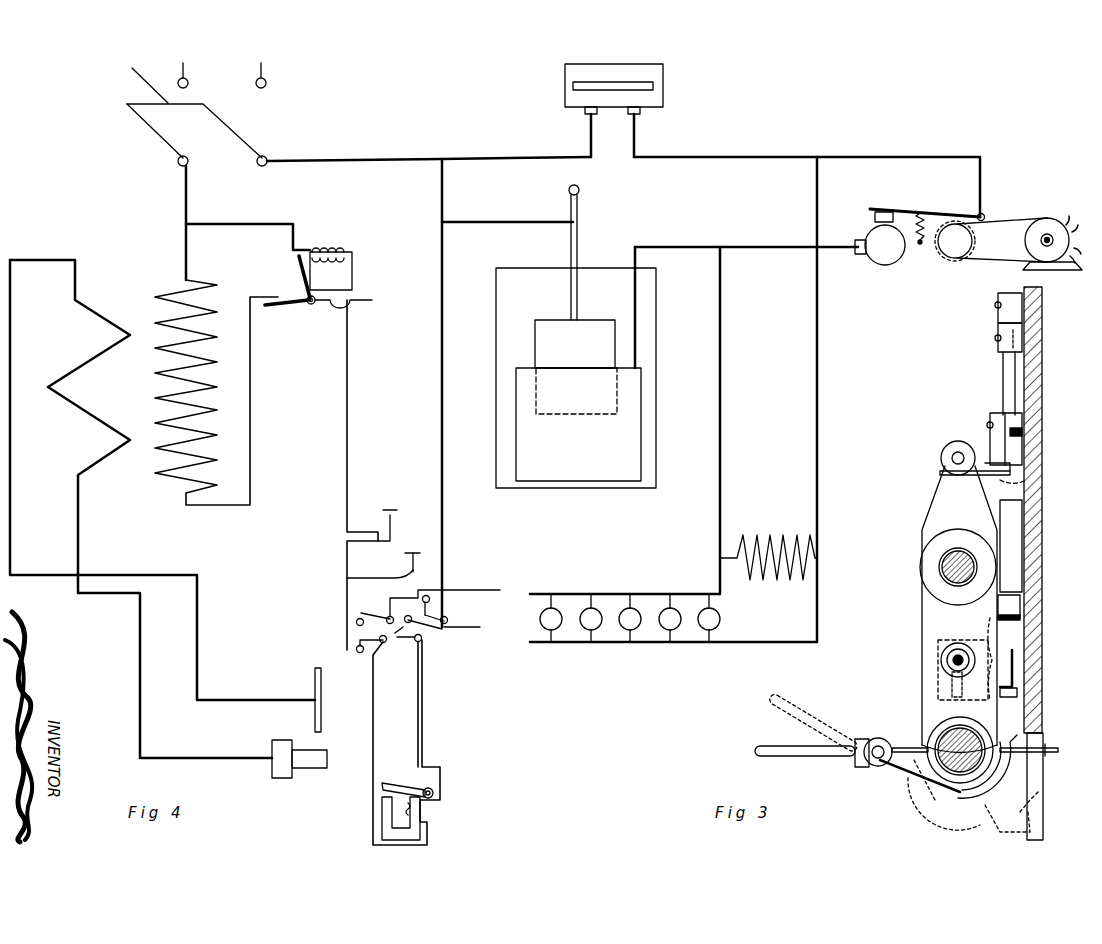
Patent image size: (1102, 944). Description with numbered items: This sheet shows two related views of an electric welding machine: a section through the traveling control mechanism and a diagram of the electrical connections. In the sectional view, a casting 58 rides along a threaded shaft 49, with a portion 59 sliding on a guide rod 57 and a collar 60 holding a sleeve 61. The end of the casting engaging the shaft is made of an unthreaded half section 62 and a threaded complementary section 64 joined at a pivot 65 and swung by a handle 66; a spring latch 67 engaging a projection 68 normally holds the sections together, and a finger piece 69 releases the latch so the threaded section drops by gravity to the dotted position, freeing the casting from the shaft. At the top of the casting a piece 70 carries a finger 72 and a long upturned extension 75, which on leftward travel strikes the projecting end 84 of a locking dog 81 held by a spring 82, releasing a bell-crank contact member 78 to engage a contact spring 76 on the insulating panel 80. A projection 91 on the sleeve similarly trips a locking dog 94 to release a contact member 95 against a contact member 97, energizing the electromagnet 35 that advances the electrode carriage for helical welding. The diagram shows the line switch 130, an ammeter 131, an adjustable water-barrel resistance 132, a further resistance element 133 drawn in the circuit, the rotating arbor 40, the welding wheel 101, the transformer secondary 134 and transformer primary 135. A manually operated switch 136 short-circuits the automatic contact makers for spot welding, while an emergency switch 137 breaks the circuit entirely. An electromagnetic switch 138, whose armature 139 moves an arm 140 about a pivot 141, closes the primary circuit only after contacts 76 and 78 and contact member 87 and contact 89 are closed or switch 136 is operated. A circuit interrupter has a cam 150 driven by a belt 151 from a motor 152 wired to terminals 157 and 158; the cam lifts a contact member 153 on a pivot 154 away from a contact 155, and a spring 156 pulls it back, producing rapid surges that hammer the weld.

In FIG. 4, the line switch 130 is at (240, 130).
In FIG. 4, the ammeter 131 is at (663, 97).
In FIG. 4, the adjustable water-barrel resistance 132 is at (629, 391).
In FIG. 4, the resistor 133 is at (770, 533).
In FIG. 4, the transformer secondary 134 is at (92, 412).
In FIG. 4, the transformer primary 135 is at (168, 378).
In FIG. 4, the manually operated switch 136 is at (413, 553).
In FIG. 4, the emergency switch 137 is at (384, 510).
In FIG. 4, the electromagnetic switch 138 is at (328, 252).
In FIG. 4, the armature 139 is at (300, 270).
In FIG. 4, the arm 140 is at (290, 306).
In FIG. 4, the pivot 141 is at (318, 305).
In FIG. 4, the cam 150 is at (962, 236).
In FIG. 4, the belt 151 is at (1012, 226).
In FIG. 4, the motor 152 is at (1059, 232).
In FIG. 4, the contact member 153 is at (900, 209).
In FIG. 4, the pivot 154 is at (984, 214).
In FIG. 4, the contact 155 is at (880, 230).
In FIG. 4, the spring 156 is at (918, 245).
In FIG. 4, the terminal 157 is at (178, 164).
In FIG. 4, the terminal 158 is at (268, 157).
In FIG. 4, the contact spring 76 is at (429, 597).
In FIG. 3, the contact spring 76 is at (1008, 308).
In FIG. 4, the contact member 78 is at (447, 621).
In FIG. 4, the contact member 87 is at (372, 612).
In FIG. 4, the contact 89 is at (356, 618).
In FIG. 4, the contact member 97 is at (395, 628).
In FIG. 3, the contact member 97 is at (1012, 550).
In FIG. 4, the contact member 95 is at (420, 642).
In FIG. 4, the welding wheel 101 is at (313, 680).
In FIG. 4, the rotating arbor 40 is at (308, 765).
In FIG. 4, the electromagnet 35 is at (392, 820).
In FIG. 3, the threaded shaft 49 is at (940, 732).
In FIG. 3, the guide rod 57 is at (940, 560).
In FIG. 3, the casting 58 is at (935, 615).
In FIG. 3, the portion 59 is at (950, 538).
In FIG. 3, the collar 60 is at (942, 648).
In FIG. 3, the sleeve 61 is at (953, 660).
In FIG. 3, the unthreaded half section 62 is at (1017, 690).
In FIG. 3, the threaded complementary section 64 is at (990, 770).
In FIG. 3, the pivot 65 is at (878, 738).
In FIG. 3, the handle 66 is at (793, 694).
In FIG. 3, the spring latch 67 is at (1006, 783).
In FIG. 3, the projection 68 is at (985, 724).
In FIG. 3, the finger piece 69 is at (1045, 744).
In FIG. 3, the piece 70 is at (952, 440).
In FIG. 3, the finger 72 is at (952, 465).
In FIG. 3, the extension 75 is at (980, 480).
In FIG. 3, the insulating panel 80 is at (1043, 395).
In FIG. 3, the locking dog 81 is at (1010, 450).
In FIG. 3, the spring 82 is at (1005, 375).
In FIG. 3, the projecting end 84 is at (1030, 481).
In FIG. 3, the projection 91 is at (1014, 670).
In FIG. 3, the locking dog 94 is at (1043, 635).